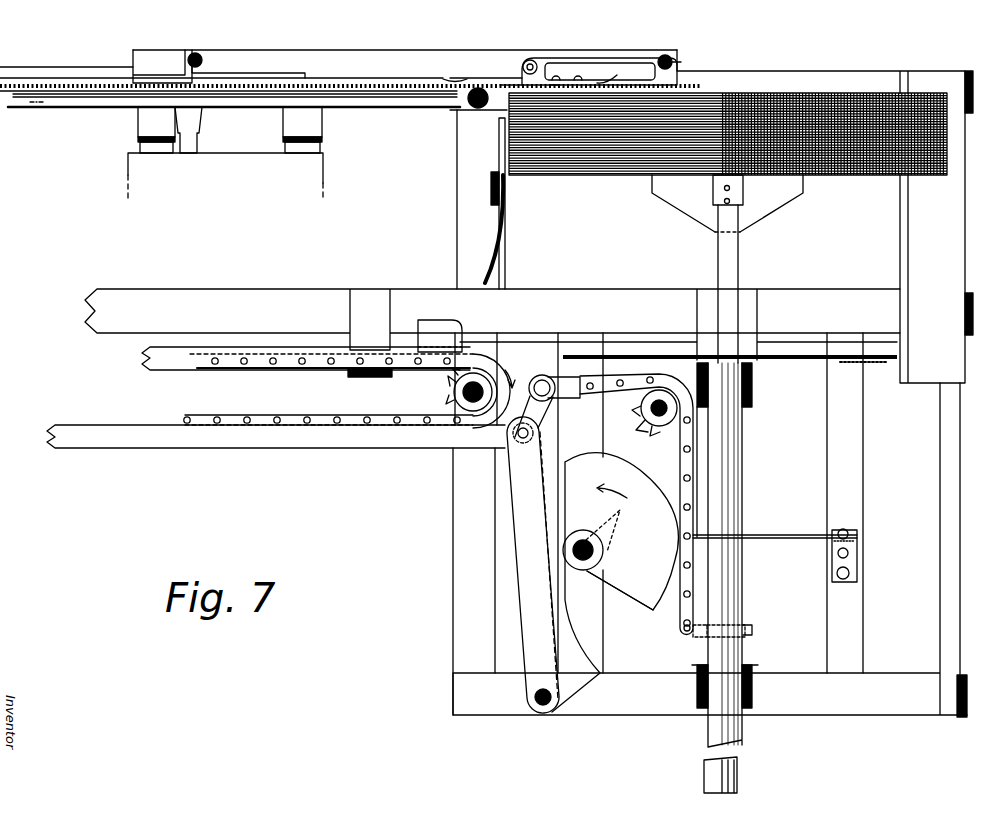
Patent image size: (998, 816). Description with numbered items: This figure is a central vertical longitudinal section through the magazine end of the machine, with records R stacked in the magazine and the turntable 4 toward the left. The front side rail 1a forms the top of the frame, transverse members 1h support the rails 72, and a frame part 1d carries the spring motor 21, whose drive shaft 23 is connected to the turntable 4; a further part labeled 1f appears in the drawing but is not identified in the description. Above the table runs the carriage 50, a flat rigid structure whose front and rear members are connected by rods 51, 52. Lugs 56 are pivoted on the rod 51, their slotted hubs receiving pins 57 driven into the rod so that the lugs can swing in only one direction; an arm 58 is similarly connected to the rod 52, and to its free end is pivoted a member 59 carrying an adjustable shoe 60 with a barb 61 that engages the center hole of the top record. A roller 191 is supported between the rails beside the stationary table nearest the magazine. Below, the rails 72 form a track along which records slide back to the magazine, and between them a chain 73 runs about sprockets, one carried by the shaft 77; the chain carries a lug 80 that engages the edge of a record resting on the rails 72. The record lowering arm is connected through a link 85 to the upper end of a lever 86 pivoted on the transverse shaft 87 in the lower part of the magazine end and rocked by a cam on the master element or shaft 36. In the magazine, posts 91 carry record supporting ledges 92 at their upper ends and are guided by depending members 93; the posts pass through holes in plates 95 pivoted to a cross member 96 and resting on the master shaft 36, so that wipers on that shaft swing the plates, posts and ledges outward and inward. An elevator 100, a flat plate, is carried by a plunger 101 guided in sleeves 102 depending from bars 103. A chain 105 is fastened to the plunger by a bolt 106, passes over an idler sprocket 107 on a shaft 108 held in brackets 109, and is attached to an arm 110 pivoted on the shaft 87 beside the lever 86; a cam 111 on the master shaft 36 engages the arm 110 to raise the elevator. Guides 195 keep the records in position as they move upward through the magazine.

The records R is at (857, 102).
The front side rail 1a is at (783, 77).
The frame part 1d is at (325, 139).
The cam 1f is at (597, 645).
The transverse members 1h is at (380, 378).
The turntable 4 is at (105, 97).
The spring motor 21 is at (324, 180).
The drive shaft 23 is at (197, 143).
The master element or shaft 36 is at (595, 553).
The carriage 50 is at (392, 47).
The rod 51 is at (197, 52).
The rod 52 is at (670, 56).
The lugs 56 is at (187, 76).
The pins 57 is at (203, 61).
The arm 58 is at (617, 57).
The member 59 is at (562, 74).
The shoe 60 is at (508, 85).
The barb 61 is at (481, 90).
The rails 72 is at (287, 352).
The chain 73 is at (267, 417).
The shaft 77 is at (463, 402).
The lug 80 is at (446, 333).
The link 85 is at (380, 440).
The lever 86 is at (507, 502).
The transverse shaft 87 is at (534, 697).
The posts 91 is at (738, 265).
The record supporting ledges 92 is at (683, 178).
The depending members 93 is at (747, 193).
The plates 95 is at (778, 535).
The cross member 96 is at (858, 542).
The elevator 100 is at (787, 362).
The plunger 101 is at (740, 480).
The sleeves 102 is at (768, 690).
The bars 103 is at (752, 372).
The chain 105 is at (684, 468).
The bolt 106 is at (681, 640).
The idler sprocket 107 is at (653, 428).
The shaft 108 is at (652, 411).
The brackets 109 is at (752, 668).
The arm 110 is at (530, 556).
The cam 111 is at (650, 605).
The roller 191 is at (481, 110).
The guides 195 is at (912, 227).